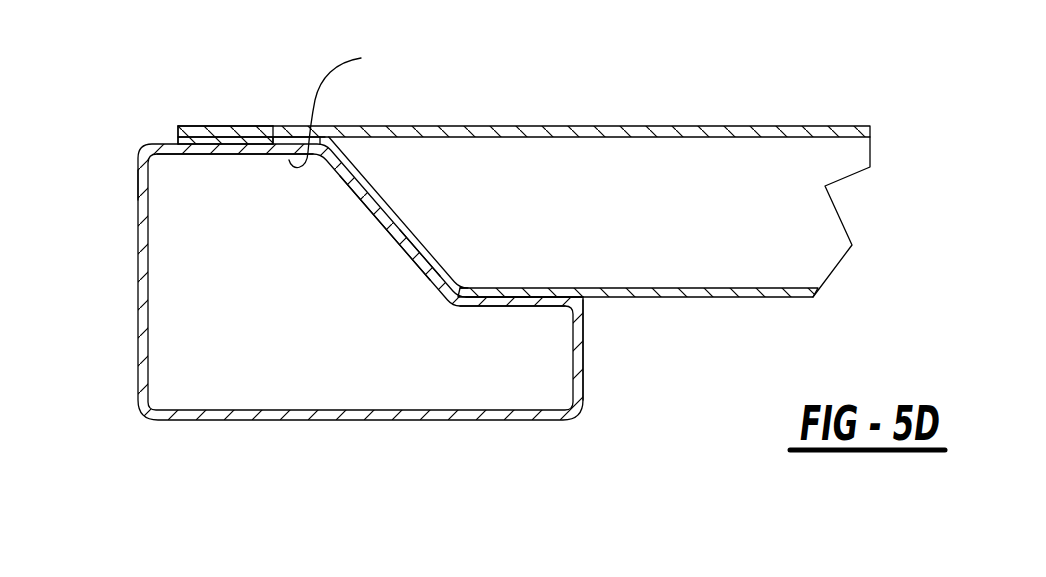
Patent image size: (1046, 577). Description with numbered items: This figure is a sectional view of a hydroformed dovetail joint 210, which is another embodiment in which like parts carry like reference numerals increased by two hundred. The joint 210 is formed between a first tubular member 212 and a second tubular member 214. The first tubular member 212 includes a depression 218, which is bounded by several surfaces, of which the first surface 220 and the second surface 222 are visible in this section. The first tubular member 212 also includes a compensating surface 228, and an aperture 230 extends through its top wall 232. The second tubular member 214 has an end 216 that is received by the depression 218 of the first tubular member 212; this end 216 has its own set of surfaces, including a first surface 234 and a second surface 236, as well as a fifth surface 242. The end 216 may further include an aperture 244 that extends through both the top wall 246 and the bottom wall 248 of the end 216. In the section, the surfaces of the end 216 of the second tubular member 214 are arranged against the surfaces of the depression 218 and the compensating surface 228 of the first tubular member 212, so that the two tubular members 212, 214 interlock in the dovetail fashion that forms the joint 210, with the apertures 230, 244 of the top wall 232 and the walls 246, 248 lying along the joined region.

The joint 210 is at (428, 105).
The first tubular member 212 is at (140, 305).
The second tubular member 214 is at (800, 126).
The end 216 is at (472, 125).
The depression 218 is at (405, 228).
The first surface 220 is at (535, 300).
The second surface 222 is at (418, 254).
The compensating surface 228 is at (583, 360).
The aperture 230 is at (242, 158).
The top wall 232 is at (178, 142).
The first surface 234 is at (473, 306).
The second surface 236 is at (392, 222).
The fifth surface 242 is at (342, 103).
The aperture 244 is at (228, 136).
The top wall 246 is at (177, 140).
The bottom wall 248 is at (200, 126).